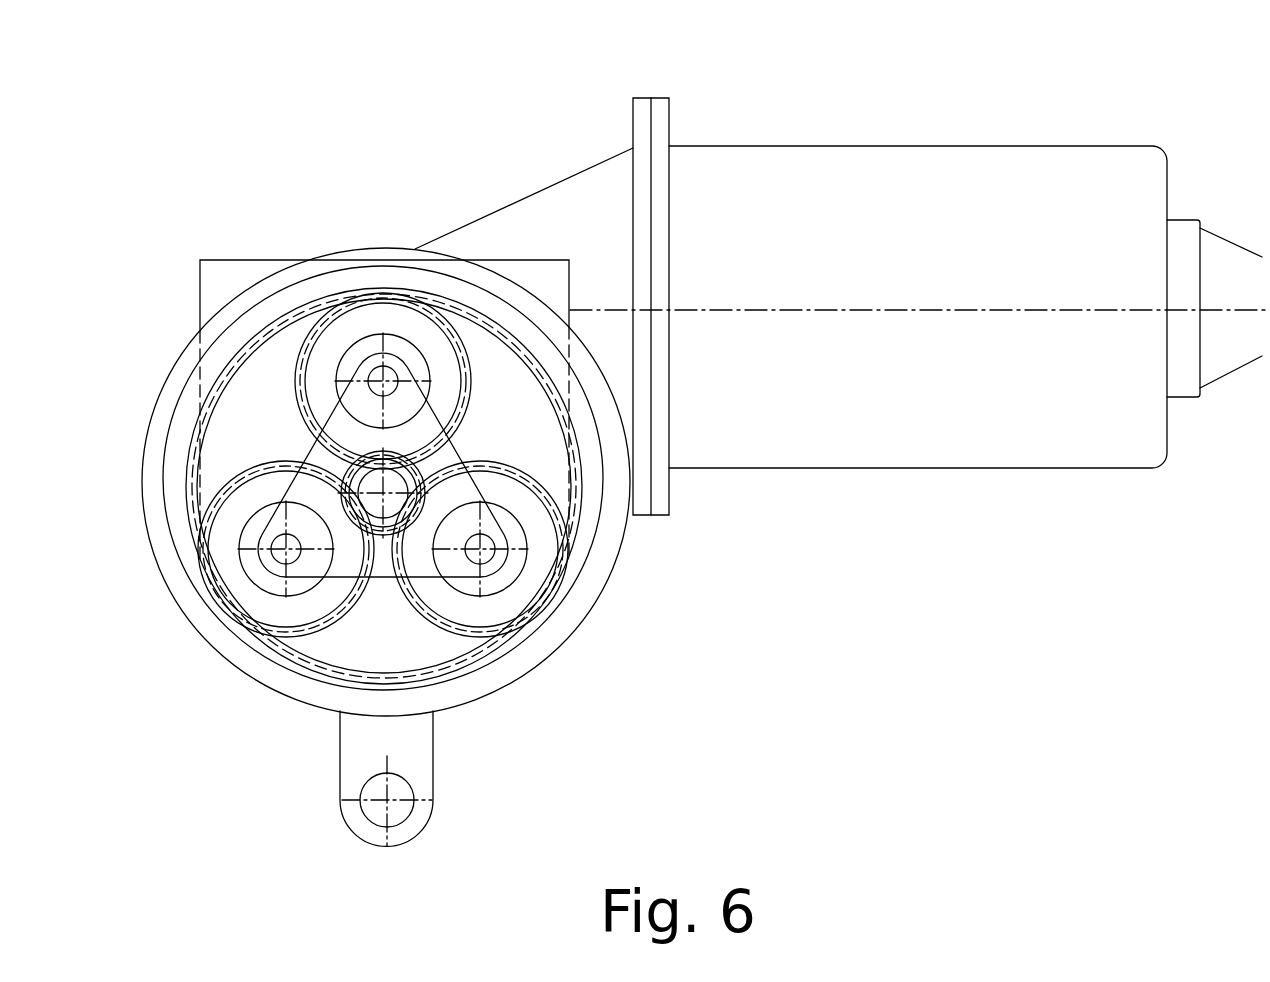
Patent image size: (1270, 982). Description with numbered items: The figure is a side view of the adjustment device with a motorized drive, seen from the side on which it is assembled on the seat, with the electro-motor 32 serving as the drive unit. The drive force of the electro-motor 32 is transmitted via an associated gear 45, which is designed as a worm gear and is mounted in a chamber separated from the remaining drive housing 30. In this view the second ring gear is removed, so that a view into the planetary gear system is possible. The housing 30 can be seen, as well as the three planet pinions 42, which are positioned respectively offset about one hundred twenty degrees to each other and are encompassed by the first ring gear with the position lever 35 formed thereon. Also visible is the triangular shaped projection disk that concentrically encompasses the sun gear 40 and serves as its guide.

The housing 30 is at (580, 640).
The electro-motor 32 is at (905, 210).
The position lever 35 is at (410, 752).
The sun gear 40 is at (373, 512).
The planet pinions 42 is at (387, 325).
The associated gear 45 is at (590, 210).